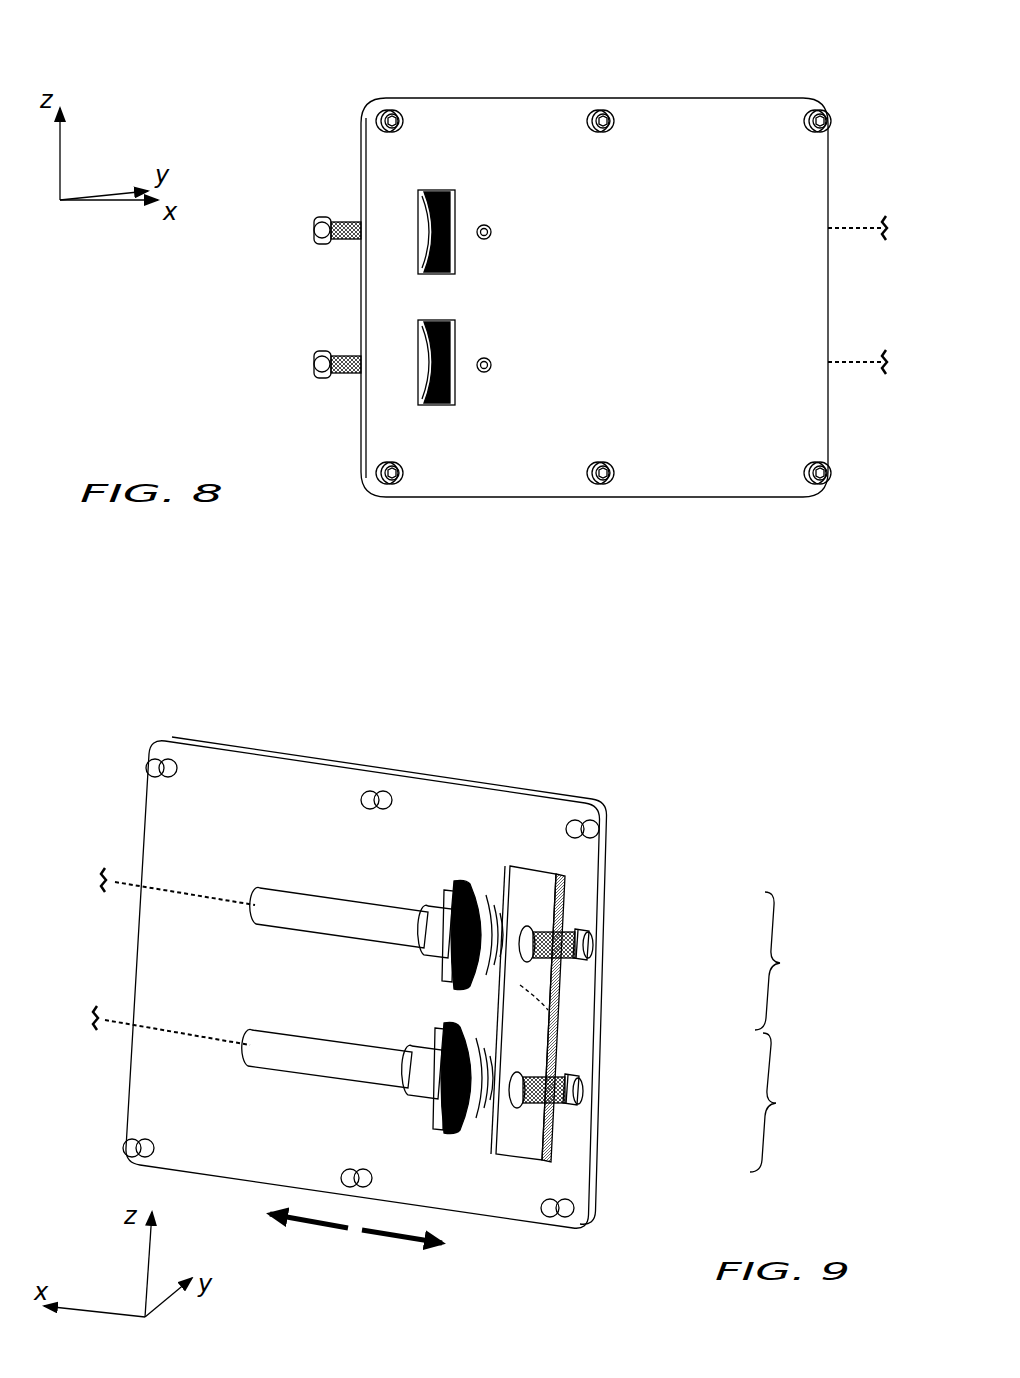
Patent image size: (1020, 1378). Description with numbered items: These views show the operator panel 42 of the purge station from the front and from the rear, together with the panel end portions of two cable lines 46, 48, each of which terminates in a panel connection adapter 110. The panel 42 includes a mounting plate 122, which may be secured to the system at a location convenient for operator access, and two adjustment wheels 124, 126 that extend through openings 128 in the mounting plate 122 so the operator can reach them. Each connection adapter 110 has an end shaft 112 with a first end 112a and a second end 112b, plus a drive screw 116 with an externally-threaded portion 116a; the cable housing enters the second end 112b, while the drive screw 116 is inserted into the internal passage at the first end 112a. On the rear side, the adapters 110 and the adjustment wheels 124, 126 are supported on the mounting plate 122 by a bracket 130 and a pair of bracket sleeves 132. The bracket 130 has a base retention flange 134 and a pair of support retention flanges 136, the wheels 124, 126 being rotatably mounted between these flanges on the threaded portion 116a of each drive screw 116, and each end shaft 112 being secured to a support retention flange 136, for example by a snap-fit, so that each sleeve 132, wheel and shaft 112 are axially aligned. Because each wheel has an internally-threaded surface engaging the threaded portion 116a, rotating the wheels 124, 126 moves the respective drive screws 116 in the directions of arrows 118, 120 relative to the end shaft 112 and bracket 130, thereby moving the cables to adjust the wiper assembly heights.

In FIG. 8, the panel 42 is at (340, 64).
In FIG. 9, the panel 42 is at (664, 786).
In FIG. 8, the cable line 46 is at (862, 225).
In FIG. 9, the cable line 46 is at (181, 886).
In FIG. 8, the cable line 48 is at (862, 371).
In FIG. 9, the cable line 48 is at (172, 1036).
In FIG. 9, the panel connection adapter 110 is at (787, 1032).
In FIG. 9, the end shaft 112 is at (347, 988).
In FIG. 9, the first end 112a is at (433, 940).
In FIG. 9, the second end 112b is at (300, 914).
In FIG. 8, the drive screw 116 is at (272, 281).
In FIG. 9, the drive screw 116 is at (622, 996).
In FIG. 8, the externally-threaded portion 116a is at (340, 240).
In FIG. 9, the externally-threaded portion 116a is at (590, 947).
In FIG. 9, the arrow 118 is at (313, 1232).
In FIG. 9, the arrow 120 is at (385, 1244).
In FIG. 8, the mounting plate 122 is at (690, 142).
In FIG. 9, the mounting plate 122 is at (282, 782).
In FIG. 8, the adjustment wheel 124 is at (422, 232).
In FIG. 9, the adjustment wheel 124 is at (478, 870).
In FIG. 8, the adjustment wheel 126 is at (425, 357).
In FIG. 9, the adjustment wheel 126 is at (452, 1128).
In FIG. 8, the opening 128 is at (458, 193).
In FIG. 9, the bracket 130 is at (573, 978).
In FIG. 9, the bracket sleeve 132 is at (537, 927).
In FIG. 9, the base retention flange 134 is at (540, 990).
In FIG. 9, the support retention flange 136 is at (454, 895).